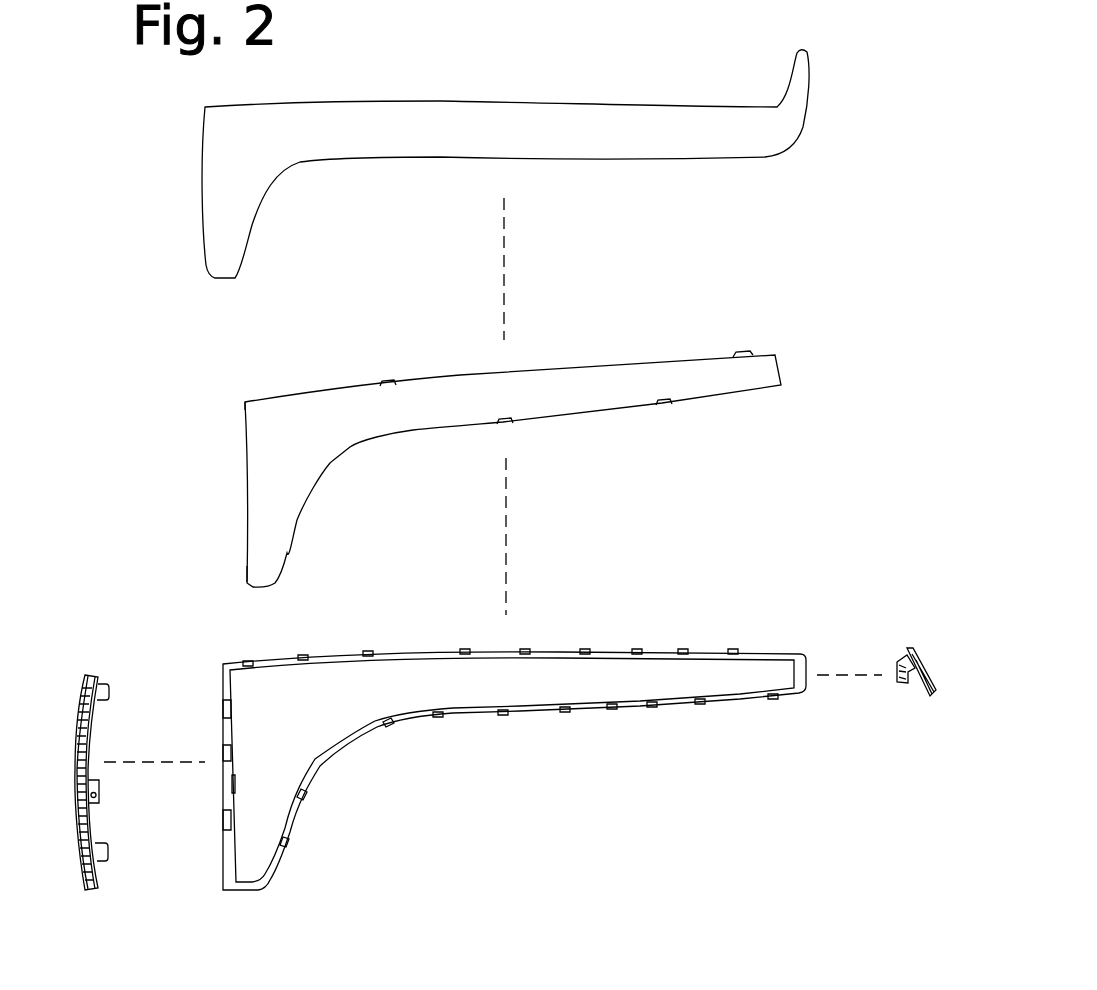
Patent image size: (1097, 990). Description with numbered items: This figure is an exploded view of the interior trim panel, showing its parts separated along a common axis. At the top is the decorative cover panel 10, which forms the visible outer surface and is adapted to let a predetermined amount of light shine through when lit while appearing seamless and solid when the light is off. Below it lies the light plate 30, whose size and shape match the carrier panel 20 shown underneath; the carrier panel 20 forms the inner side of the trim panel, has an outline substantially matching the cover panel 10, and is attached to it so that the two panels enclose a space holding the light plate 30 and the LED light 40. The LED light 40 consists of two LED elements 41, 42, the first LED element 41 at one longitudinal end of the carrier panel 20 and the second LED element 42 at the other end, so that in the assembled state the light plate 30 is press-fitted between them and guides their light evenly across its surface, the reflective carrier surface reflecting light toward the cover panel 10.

The decorative cover panel 10 is at (168, 172).
The carrier panel 20 is at (362, 796).
The light plate 30 is at (224, 467).
The LED light 40 is at (149, 698).
The first LED element 41 is at (131, 678).
The second LED element 42 is at (894, 635).